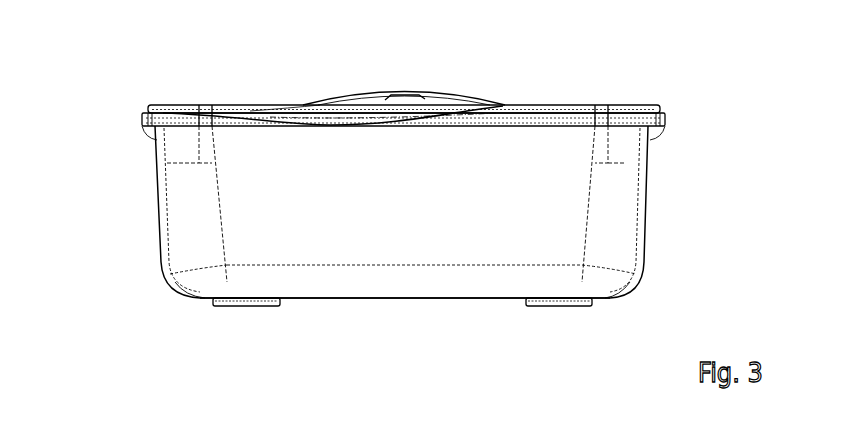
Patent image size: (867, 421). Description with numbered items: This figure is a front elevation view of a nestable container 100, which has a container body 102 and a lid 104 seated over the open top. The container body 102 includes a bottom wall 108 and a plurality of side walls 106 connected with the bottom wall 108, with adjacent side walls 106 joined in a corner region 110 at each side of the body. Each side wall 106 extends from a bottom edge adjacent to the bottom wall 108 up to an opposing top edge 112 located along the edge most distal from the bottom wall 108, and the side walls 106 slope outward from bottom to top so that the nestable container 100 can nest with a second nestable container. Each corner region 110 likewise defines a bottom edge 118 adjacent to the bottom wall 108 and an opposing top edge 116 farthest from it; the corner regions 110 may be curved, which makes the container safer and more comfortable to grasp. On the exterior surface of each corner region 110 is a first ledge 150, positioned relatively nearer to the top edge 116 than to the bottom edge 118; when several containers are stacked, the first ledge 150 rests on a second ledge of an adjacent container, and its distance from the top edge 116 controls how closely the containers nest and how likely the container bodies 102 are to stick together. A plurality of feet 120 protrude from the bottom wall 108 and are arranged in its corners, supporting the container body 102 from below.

The nestable container 100 is at (113, 52).
The container body 102 is at (203, 254).
The lid 104 is at (445, 100).
The side wall 106 is at (528, 142).
The bottom wall 108 is at (430, 300).
The corner region 110 is at (157, 227).
The top edge 112 is at (280, 105).
The top edge 116 is at (190, 105).
The bottom edge 118 is at (203, 300).
The feet 120 is at (245, 307).
The first ledge 150 is at (185, 164).